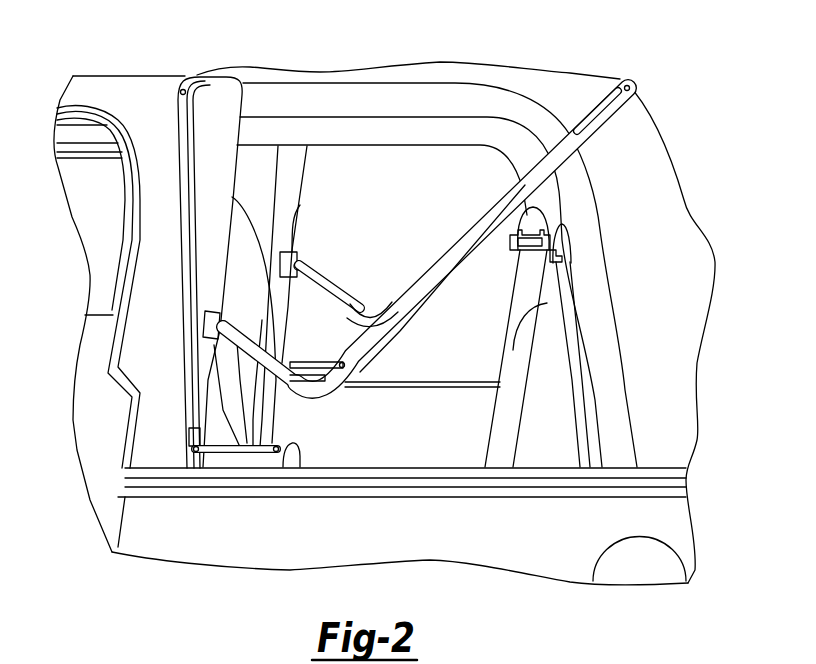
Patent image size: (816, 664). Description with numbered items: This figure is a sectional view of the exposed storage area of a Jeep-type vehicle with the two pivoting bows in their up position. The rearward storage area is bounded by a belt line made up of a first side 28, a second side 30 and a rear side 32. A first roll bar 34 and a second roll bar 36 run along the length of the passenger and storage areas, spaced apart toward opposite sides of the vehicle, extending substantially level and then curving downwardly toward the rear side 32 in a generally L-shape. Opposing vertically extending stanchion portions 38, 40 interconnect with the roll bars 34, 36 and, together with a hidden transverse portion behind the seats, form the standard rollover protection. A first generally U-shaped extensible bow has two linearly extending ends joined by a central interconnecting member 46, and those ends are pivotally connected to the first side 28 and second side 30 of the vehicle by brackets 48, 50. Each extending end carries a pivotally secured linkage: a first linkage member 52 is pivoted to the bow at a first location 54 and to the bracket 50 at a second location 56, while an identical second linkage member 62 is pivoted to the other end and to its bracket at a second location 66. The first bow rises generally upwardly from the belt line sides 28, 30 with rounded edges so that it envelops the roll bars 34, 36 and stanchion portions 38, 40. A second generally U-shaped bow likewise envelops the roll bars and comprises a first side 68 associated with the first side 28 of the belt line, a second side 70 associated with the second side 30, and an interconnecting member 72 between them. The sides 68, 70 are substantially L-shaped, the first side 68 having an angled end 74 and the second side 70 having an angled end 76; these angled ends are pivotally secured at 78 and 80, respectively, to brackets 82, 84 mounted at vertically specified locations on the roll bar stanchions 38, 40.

The first side 28 is at (412, 535).
The second side 30 is at (412, 441).
The rear side 32 is at (668, 467).
The first roll bar 34 is at (475, 92).
The second roll bar 36 is at (458, 146).
The stanchion portion 38 is at (206, 124).
The stanchion portion 40 is at (283, 197).
The central interconnecting member 46 is at (192, 84).
The bracket 48 is at (292, 446).
The bracket 50 is at (392, 307).
The first linkage member 52 is at (255, 454).
The first location 54 is at (280, 452).
The second location 56 is at (195, 451).
The second linkage member 62 is at (290, 362).
The second location 66 is at (356, 306).
The first side 68 is at (435, 262).
The second side 70 is at (437, 310).
The interconnecting member 72 is at (624, 80).
The angled end 74 is at (259, 308).
The angled end 76 is at (330, 268).
The pivot 78 is at (226, 310).
The pivot 80 is at (300, 252).
The bracket 82 is at (212, 312).
The bracket 84 is at (300, 205).